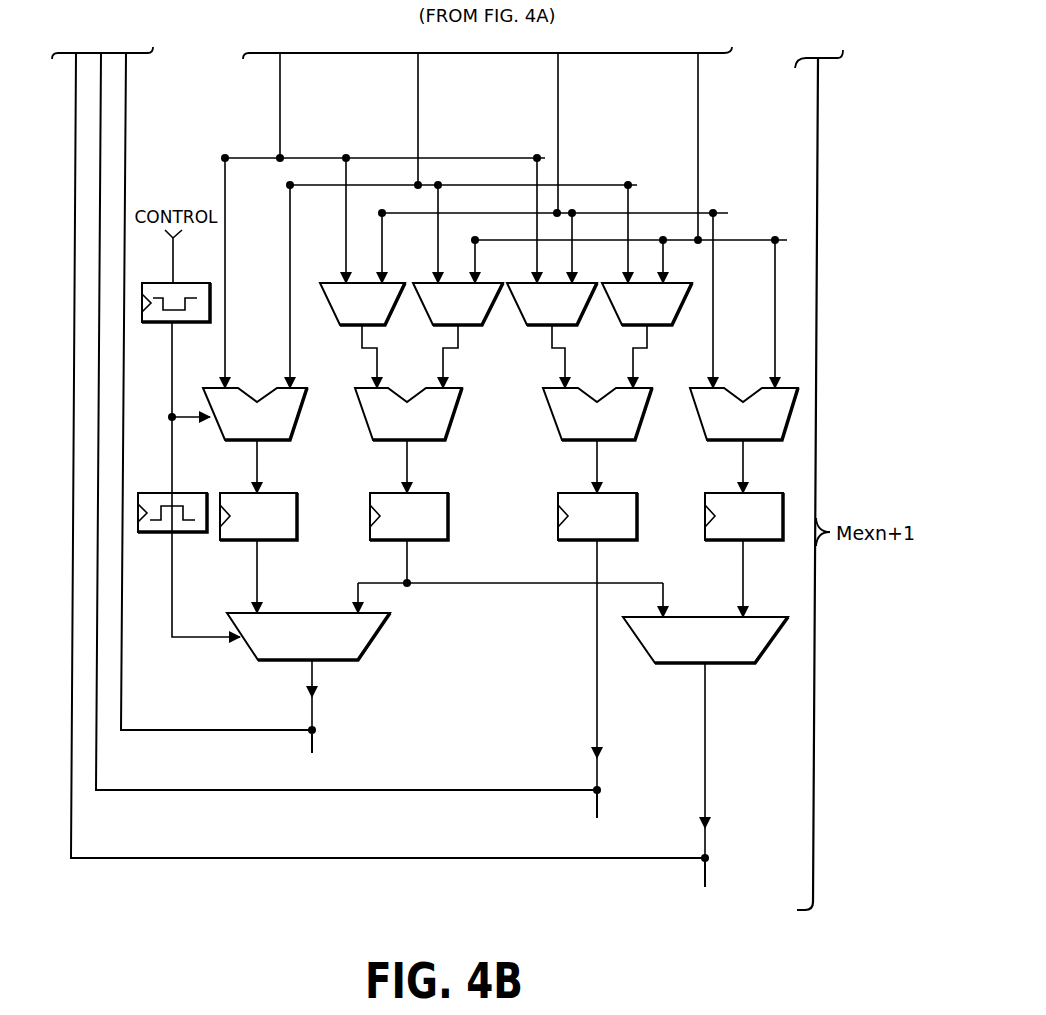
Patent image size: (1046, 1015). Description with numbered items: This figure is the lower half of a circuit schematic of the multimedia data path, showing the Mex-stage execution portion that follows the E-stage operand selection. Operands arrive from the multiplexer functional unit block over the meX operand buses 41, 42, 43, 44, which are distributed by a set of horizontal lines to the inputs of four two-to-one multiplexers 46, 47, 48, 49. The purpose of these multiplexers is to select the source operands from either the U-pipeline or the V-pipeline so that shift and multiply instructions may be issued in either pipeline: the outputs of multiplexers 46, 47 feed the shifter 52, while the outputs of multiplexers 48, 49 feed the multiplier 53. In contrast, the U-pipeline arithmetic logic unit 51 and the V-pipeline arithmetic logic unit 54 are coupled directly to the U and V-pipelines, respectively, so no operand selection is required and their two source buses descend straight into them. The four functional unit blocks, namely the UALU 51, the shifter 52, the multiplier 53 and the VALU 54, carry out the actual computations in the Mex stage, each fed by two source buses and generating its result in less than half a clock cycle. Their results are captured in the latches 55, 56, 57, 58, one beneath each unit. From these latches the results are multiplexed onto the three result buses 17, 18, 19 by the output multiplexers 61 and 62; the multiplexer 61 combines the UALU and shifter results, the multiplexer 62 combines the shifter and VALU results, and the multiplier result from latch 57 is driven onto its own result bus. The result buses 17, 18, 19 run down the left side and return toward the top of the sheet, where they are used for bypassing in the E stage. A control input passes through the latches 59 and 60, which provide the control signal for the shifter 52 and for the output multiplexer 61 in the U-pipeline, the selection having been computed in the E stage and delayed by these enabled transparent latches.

The result bus 17 is at (76, 146).
The result bus 18 is at (103, 125).
The result bus 19 is at (126, 165).
The meX operand bus 41 is at (280, 104).
The meX operand bus 42 is at (418, 104).
The meX operand bus 43 is at (558, 104).
The meX operand bus 44 is at (698, 104).
The 2:1 multiplexer 46 is at (330, 305).
The 2:1 multiplexer 47 is at (426, 312).
The 2:1 multiplexer 48 is at (521, 312).
The 2:1 multiplexer 49 is at (679, 312).
The U-pipeline arithmetic logic unit (UALU) 51 is at (230, 440).
The shifter (SHFT) 52 is at (383, 440).
The multiplier (MUL) 53 is at (572, 440).
The V-pipeline arithmetic logic unit (VALU) 54 is at (715, 440).
The latch 55 is at (233, 540).
The latch 56 is at (383, 540).
The latch 57 is at (577, 540).
The latch 58 is at (718, 540).
The latch 59 is at (155, 322).
The latch 60 is at (160, 532).
The multiplexer 61 is at (373, 645).
The multiplexer 62 is at (768, 645).